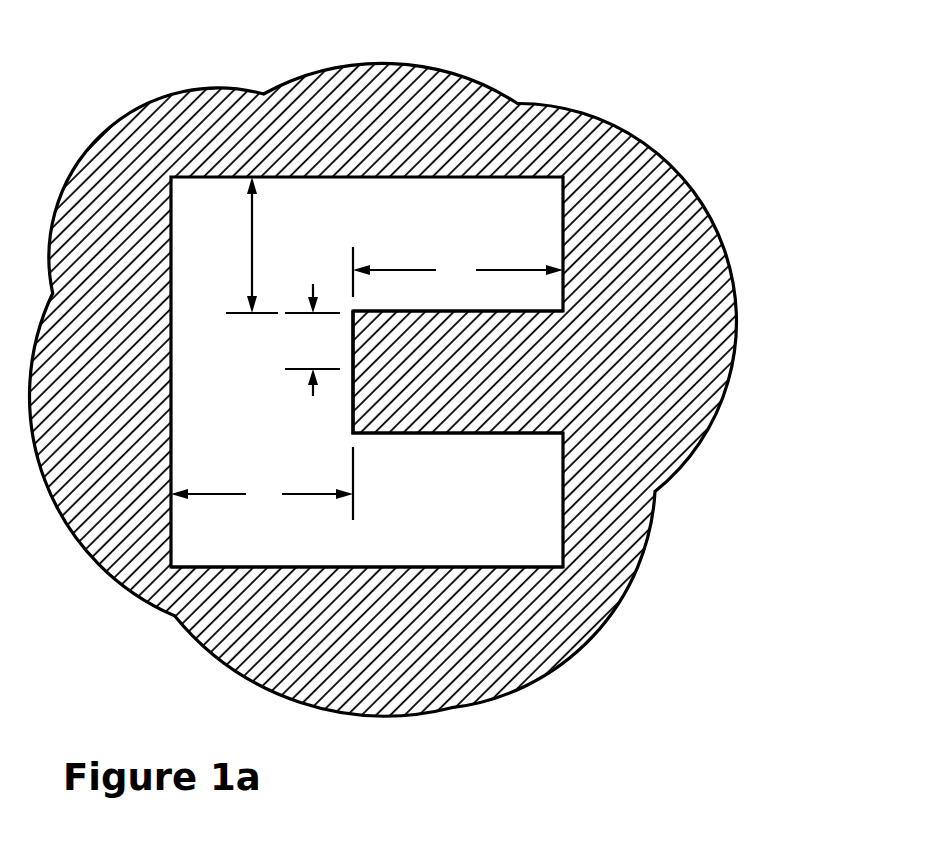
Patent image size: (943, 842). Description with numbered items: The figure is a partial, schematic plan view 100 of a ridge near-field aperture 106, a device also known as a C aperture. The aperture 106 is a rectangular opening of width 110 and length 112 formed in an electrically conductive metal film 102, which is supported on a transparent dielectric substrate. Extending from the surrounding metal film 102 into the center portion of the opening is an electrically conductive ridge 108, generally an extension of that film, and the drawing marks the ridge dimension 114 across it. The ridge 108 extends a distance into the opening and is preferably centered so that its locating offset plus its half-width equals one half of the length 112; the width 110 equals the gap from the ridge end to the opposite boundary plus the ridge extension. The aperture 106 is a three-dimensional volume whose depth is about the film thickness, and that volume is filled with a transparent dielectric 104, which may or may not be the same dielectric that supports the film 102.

The partial, schematic plan view 100 is at (425, 389).
The electrically conductive metal film 102 is at (371, 654).
The transparent dielectric 104 is at (413, 524).
The ridge near-field aperture 106 is at (472, 567).
The electrically conductive ridge 108 is at (540, 368).
The width 110 is at (563, 127).
The length 112 is at (171, 177).
The stub width 114 is at (470, 321).